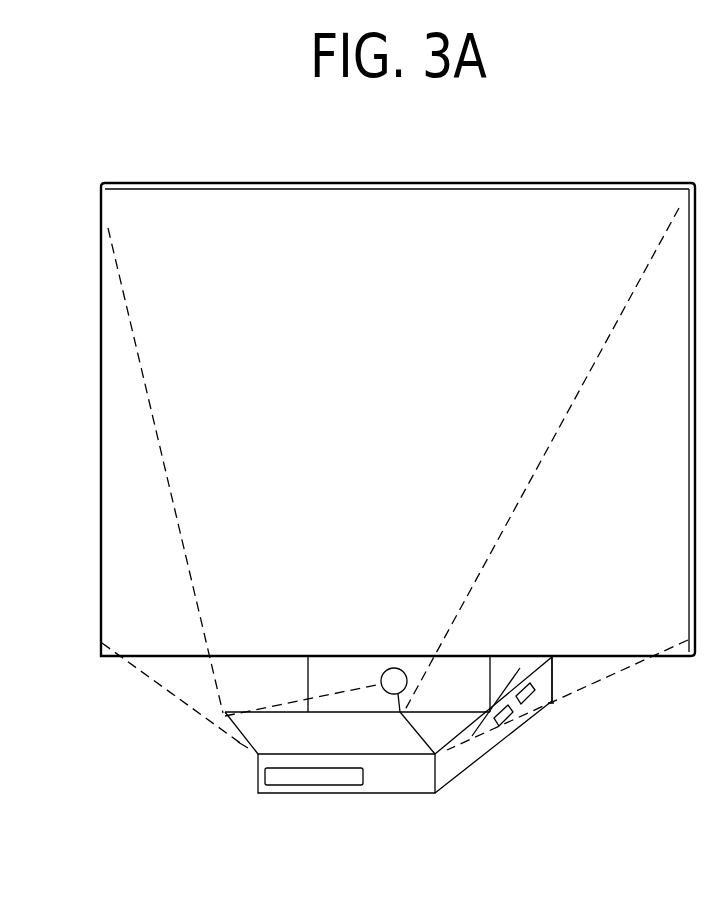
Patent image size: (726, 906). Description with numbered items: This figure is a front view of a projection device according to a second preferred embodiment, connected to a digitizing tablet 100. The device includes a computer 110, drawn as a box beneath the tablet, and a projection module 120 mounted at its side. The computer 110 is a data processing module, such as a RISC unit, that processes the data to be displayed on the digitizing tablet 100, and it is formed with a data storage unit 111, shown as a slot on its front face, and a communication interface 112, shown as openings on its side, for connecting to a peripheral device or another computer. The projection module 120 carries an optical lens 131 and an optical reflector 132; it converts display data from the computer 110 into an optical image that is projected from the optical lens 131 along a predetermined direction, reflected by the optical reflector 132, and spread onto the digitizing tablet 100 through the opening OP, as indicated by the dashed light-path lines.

The digitizing tablet 100 is at (650, 183).
The opening OP is at (290, 705).
The computer 110 is at (450, 760).
The data storage unit 111 is at (352, 785).
The communication interface 112 is at (512, 728).
The projection module 120 is at (555, 662).
The optical lens 131 is at (382, 670).
The optical reflector 132 is at (240, 737).